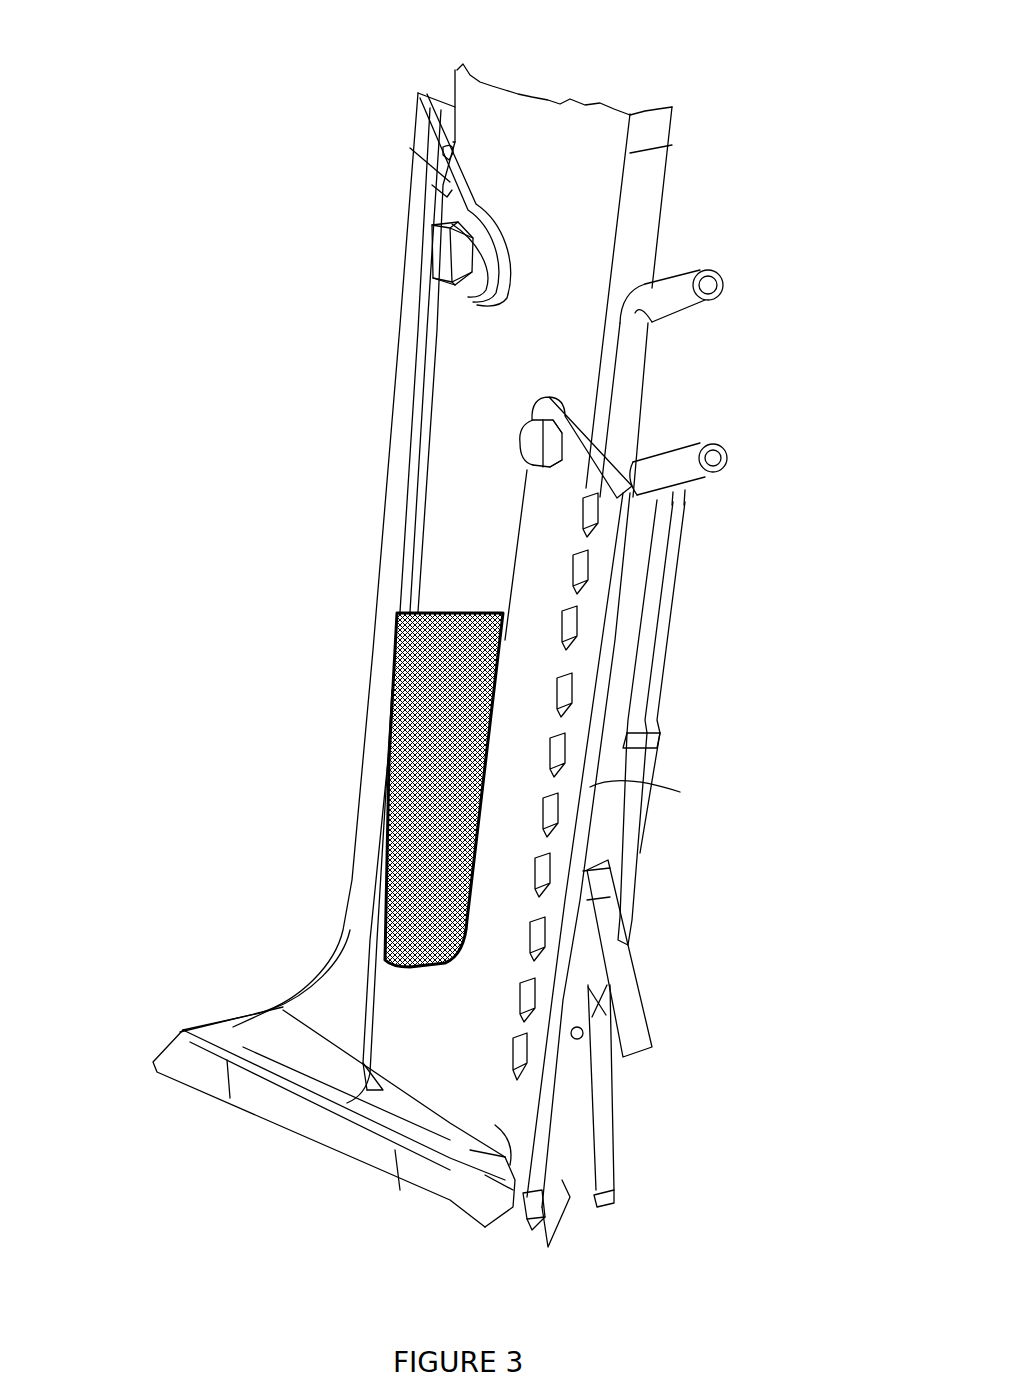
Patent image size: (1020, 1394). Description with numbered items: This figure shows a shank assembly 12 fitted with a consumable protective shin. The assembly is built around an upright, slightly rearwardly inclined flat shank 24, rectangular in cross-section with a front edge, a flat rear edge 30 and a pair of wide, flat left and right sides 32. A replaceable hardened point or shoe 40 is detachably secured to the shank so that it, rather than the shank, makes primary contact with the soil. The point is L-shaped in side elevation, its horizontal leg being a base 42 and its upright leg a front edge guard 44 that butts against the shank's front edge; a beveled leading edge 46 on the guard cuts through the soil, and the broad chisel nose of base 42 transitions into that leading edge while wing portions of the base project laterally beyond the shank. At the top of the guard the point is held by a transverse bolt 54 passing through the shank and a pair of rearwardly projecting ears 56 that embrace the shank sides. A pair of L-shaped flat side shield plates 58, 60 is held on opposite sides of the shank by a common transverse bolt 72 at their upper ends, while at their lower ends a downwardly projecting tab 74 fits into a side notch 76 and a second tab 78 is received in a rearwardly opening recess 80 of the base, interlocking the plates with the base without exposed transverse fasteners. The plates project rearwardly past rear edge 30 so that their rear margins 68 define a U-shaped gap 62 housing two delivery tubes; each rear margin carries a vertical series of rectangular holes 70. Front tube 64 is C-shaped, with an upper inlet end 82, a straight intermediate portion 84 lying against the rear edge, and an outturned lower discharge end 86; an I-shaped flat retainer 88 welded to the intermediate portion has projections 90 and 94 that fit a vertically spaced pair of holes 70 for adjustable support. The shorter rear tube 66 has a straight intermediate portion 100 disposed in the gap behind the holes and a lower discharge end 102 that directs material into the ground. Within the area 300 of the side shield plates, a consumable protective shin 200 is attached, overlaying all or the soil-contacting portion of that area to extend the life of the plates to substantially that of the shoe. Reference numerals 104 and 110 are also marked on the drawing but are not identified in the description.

The shank assembly 12 is at (142, 208).
The shank 24 is at (678, 146).
The rear edge 30 is at (640, 243).
The sides 32 is at (515, 122).
The point 40 is at (150, 1050).
The base 42 is at (292, 1110).
The front edge guard 44 is at (377, 668).
The leading edge 46 is at (388, 424).
The transverse bolt 54 is at (437, 253).
The ears 56 is at (453, 165).
The side shield plate 58 is at (444, 1061).
The side shield plate 60 is at (672, 648).
The gap 62 is at (660, 430).
The front delivery tube 64 is at (652, 360).
The rear delivery tube 66 is at (626, 745).
The rear margin 68 is at (620, 832).
The rectangular holes 70 is at (519, 985).
The transverse bolt 72 is at (523, 443).
The downwardly projecting tab 74 is at (398, 1150).
The side notch 76 is at (458, 1195).
The second downwardly projecting tab 78 is at (550, 1250).
The rearwardly opening recess 80 is at (508, 1150).
The upper inlet end 82 is at (726, 285).
The intermediate portion 84 is at (628, 412).
The lower end 86 is at (588, 1148).
The retainer 88 is at (702, 472).
The upper projection 90 is at (538, 872).
The lower projection 94 is at (516, 1038).
The intermediate portion 100 is at (628, 683).
The lower discharge end 102 is at (655, 1043).
The slot 104 is at (572, 632).
The slot 110 is at (548, 762).
The consumable protective shin 200 is at (458, 788).
The area 300 is at (455, 555).